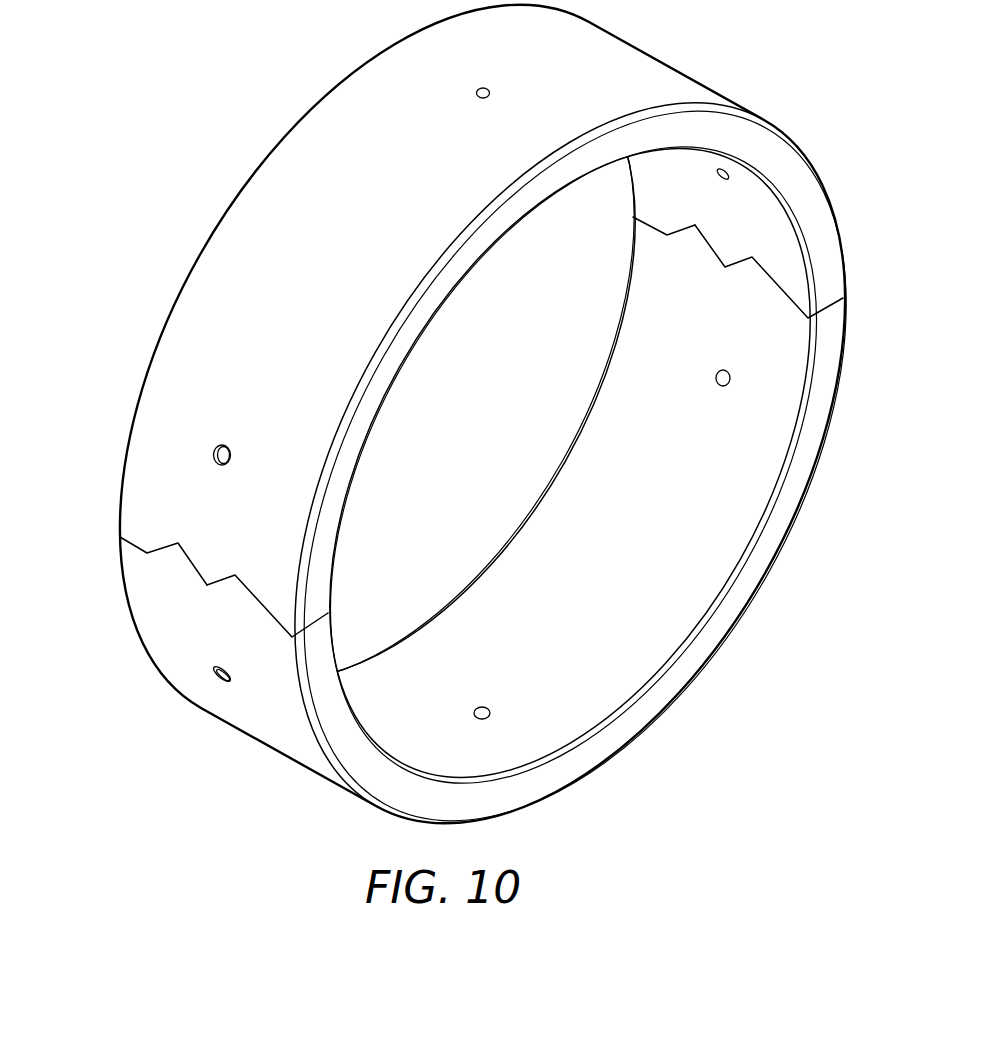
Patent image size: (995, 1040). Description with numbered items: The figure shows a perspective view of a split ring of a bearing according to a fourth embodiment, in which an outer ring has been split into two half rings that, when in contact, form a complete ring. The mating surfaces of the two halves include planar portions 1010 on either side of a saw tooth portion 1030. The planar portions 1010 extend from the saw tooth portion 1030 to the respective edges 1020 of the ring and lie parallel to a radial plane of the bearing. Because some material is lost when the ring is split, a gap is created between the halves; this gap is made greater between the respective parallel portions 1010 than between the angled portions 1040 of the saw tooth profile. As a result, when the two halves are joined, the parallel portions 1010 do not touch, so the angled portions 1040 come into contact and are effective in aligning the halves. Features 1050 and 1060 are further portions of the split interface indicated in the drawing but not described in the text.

The planar portion 1010 is at (137, 543).
The edge 1020 is at (270, 167).
The saw tooth portion 1030 is at (737, 268).
The angled portion 1040 is at (193, 560).
The joint interface 1050 is at (137, 550).
The joint interface 1060 is at (650, 232).